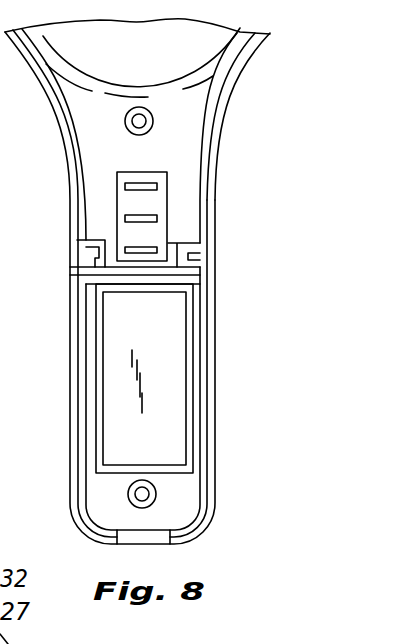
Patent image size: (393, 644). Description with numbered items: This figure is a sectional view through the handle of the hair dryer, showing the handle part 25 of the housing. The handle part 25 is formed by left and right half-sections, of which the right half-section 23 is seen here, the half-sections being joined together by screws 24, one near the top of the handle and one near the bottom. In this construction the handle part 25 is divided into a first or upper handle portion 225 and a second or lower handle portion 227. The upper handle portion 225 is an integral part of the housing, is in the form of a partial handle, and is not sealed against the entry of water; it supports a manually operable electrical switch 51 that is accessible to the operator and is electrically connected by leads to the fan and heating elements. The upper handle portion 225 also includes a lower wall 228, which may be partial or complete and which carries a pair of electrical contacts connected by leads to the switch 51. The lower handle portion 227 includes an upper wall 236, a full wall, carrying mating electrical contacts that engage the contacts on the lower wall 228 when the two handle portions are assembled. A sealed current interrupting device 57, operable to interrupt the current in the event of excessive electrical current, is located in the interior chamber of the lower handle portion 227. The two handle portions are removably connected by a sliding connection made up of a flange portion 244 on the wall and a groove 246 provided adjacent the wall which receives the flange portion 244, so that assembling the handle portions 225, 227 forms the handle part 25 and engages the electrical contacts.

The right half-section 23 is at (290, 20).
The screw 24 is at (124, 118).
The upper handle portion 225 is at (182, 140).
The electrical switch 51 is at (163, 192).
The groove 246 is at (110, 256).
The flange portion 244 is at (200, 267).
The lower wall 228 is at (127, 273).
The handle part 25 is at (232, 327).
The upper wall 236 is at (166, 283).
The current interrupting device 57 is at (143, 363).
The lower handle portion 227 is at (218, 444).